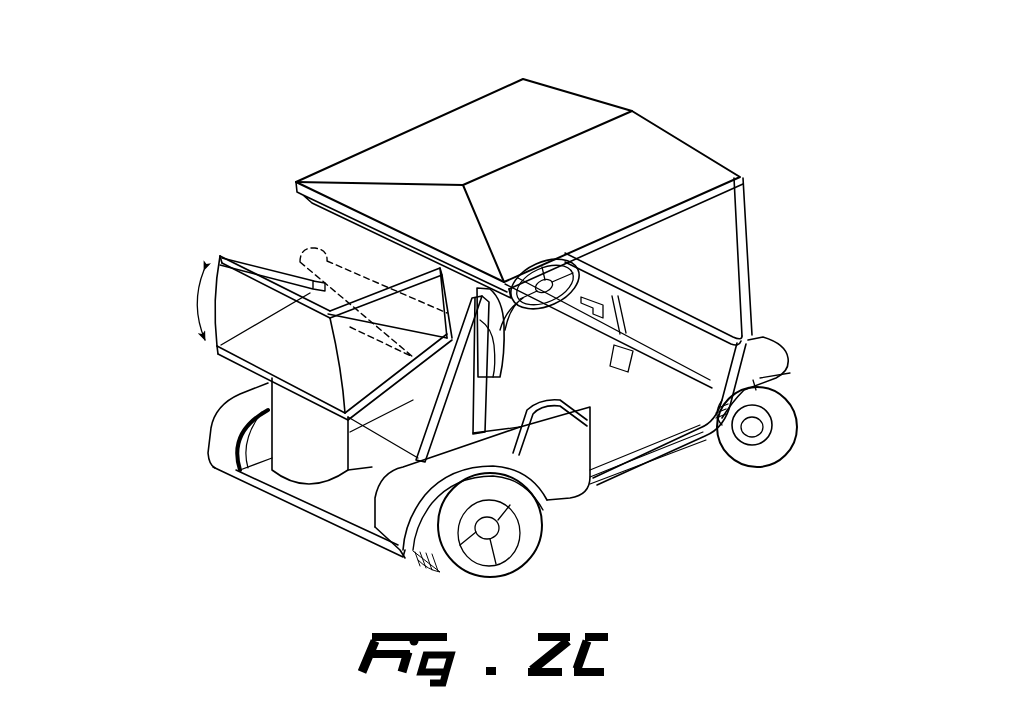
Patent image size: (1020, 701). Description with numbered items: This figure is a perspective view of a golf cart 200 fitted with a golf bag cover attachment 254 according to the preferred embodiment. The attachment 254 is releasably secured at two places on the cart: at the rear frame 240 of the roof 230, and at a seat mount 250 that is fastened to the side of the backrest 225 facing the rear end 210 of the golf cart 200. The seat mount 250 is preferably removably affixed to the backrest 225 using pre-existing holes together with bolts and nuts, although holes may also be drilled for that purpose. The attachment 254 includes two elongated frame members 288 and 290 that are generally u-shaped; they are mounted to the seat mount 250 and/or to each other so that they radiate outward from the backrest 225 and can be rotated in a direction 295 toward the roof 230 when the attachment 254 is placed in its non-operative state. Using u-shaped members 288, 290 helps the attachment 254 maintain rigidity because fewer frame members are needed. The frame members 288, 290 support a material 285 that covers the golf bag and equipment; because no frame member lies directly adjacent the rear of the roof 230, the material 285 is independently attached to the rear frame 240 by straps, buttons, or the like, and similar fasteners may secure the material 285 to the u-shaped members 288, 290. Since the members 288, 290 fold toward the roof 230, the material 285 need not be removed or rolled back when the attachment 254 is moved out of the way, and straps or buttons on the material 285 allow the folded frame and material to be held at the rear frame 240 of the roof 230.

The golf cart 200 is at (777, 135).
The rear end 210 is at (297, 512).
The backrest 225 is at (493, 353).
The roof 230 is at (447, 132).
The rear frame 240 is at (293, 180).
The seat mount 250 is at (443, 358).
The golf bag cover attachment 254 is at (188, 230).
The material 285 is at (280, 247).
The elongated frame member 288 is at (210, 353).
The elongated frame member 290 is at (210, 257).
The direction 295 is at (176, 305).